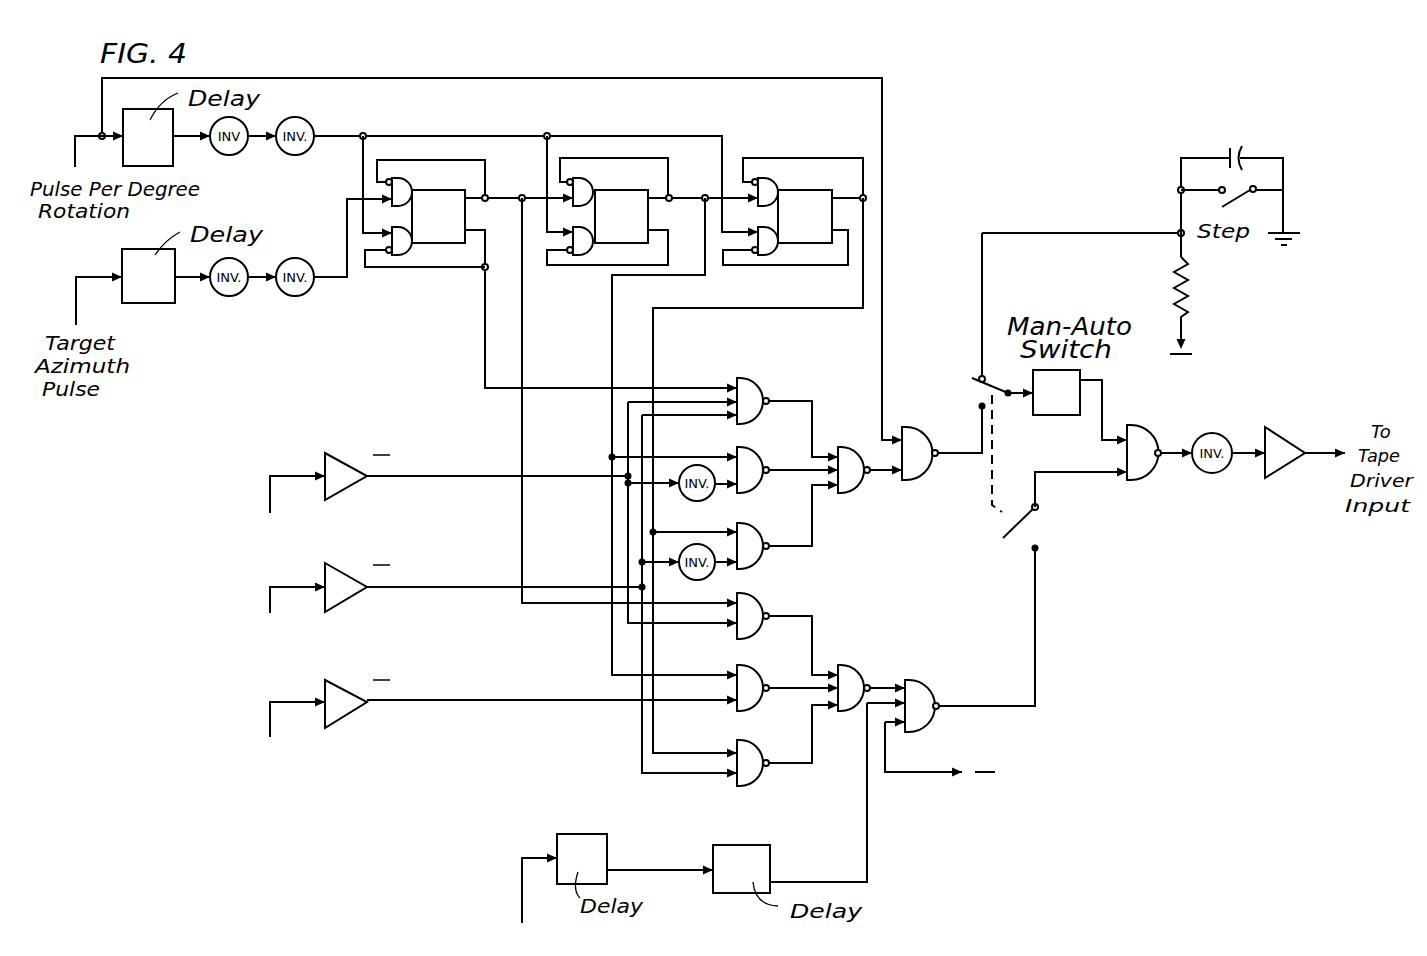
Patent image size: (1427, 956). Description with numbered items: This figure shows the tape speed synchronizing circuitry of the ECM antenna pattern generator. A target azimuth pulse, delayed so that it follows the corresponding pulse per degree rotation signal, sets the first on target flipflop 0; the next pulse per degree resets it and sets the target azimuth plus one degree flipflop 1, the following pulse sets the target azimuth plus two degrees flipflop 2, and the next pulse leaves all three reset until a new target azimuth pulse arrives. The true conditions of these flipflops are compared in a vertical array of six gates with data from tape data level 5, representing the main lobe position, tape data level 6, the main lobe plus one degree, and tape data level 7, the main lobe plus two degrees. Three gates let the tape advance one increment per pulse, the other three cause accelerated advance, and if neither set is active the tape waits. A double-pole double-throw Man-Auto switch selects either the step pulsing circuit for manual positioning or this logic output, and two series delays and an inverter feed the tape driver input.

The first on target flipflop 0 is at (499, 396).
The target azimuth plus one degree flipflop 1 is at (652, 419).
The target azimuth plus two degrees flipflop 2 is at (867, 233).
The tape data level 5 is at (434, 499).
The tape data level 6 is at (487, 722).
The tape data level 7 is at (441, 603).